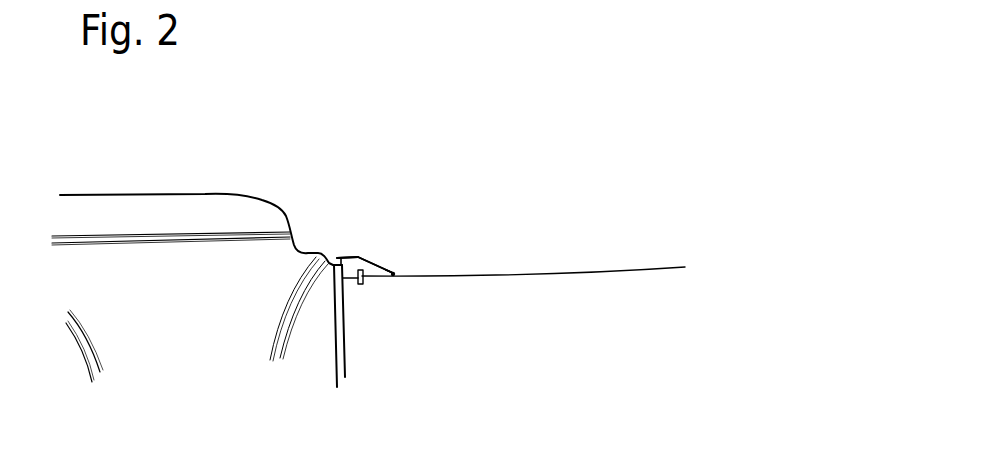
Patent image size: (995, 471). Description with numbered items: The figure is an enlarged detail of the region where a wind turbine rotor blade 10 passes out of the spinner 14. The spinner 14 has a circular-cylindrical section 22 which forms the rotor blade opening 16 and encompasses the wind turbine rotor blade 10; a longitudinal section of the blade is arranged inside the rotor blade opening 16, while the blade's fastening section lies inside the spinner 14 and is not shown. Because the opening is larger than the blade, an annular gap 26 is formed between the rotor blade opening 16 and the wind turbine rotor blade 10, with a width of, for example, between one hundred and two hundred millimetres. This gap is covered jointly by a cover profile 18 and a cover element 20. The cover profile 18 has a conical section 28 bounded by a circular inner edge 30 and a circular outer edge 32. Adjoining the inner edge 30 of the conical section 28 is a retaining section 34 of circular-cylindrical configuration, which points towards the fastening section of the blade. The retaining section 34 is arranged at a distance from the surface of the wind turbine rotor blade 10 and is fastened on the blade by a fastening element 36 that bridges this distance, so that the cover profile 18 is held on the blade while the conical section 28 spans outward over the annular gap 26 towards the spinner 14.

The wind turbine rotor blade 10 is at (623, 297).
The spinner 14 is at (212, 212).
The rotor blade opening 16 is at (347, 348).
The cover profile 18 is at (369, 248).
The cover element 20 is at (391, 269).
The circular-cylindrical section 22 is at (343, 318).
The annular gap 26 is at (335, 255).
The conical section 28 is at (385, 262).
The inner edge 30 is at (399, 279).
The outer edge 32 is at (358, 255).
The retaining section 34 is at (370, 278).
The fastening element 36 is at (357, 286).